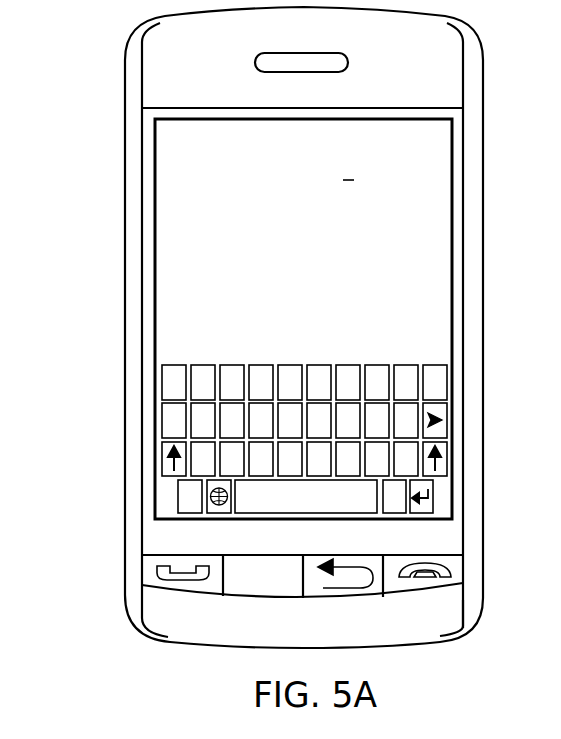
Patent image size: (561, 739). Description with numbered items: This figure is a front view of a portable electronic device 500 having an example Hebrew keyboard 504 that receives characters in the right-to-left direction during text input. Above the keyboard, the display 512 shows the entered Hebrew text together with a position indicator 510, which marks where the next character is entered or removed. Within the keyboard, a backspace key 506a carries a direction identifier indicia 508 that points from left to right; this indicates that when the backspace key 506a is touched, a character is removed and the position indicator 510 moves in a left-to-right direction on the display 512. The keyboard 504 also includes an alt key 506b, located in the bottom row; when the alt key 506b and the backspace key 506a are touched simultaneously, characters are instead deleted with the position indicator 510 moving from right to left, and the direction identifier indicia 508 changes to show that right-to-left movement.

The portable electronic device 500 is at (480, 670).
The display 512 is at (170, 205).
The position indicator 510 is at (350, 181).
The Hebrew keyboard 504 is at (163, 366).
The backspace key 506a is at (442, 424).
The direction identifier indicia 508 is at (442, 411).
The alt key 506b is at (190, 514).